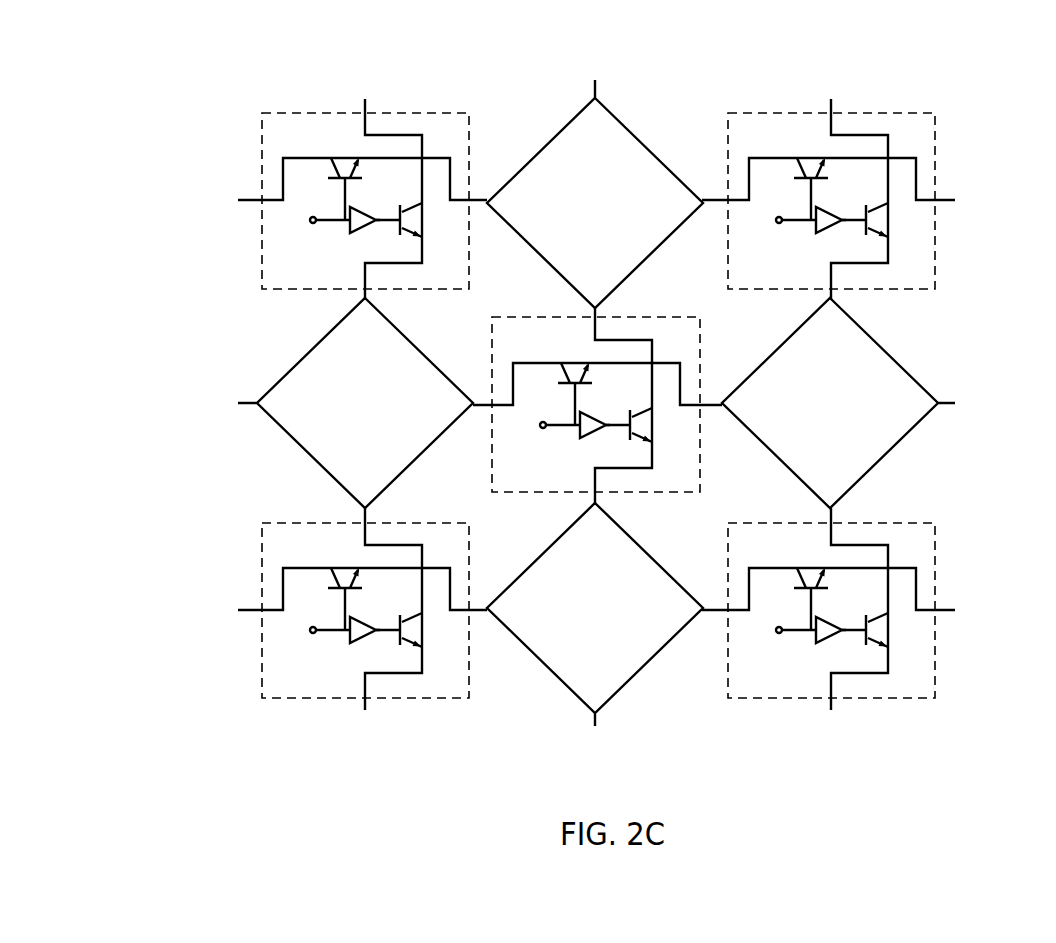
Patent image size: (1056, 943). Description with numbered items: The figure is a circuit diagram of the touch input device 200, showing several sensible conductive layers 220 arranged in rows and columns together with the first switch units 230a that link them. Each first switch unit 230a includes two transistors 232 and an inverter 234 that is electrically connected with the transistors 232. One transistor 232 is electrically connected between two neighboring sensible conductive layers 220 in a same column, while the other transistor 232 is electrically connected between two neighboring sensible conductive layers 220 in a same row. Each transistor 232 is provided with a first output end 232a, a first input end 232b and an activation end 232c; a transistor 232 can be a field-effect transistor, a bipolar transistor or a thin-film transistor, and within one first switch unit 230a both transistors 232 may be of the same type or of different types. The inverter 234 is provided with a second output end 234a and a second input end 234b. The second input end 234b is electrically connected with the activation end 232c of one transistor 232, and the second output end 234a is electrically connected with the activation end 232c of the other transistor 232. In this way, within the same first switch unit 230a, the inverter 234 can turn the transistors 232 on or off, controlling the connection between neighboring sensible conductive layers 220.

The touch input device 200 is at (565, 400).
The sensible conductive layer 220 is at (612, 208).
The first switch unit 230a is at (255, 148).
The transistor 232 is at (342, 148).
The first output end 232a is at (360, 160).
The first input end 232b is at (338, 172).
The activation end 232c is at (338, 182).
The inverter 234 is at (360, 235).
The second output end 234a is at (372, 216).
The second input end 234b is at (350, 228).